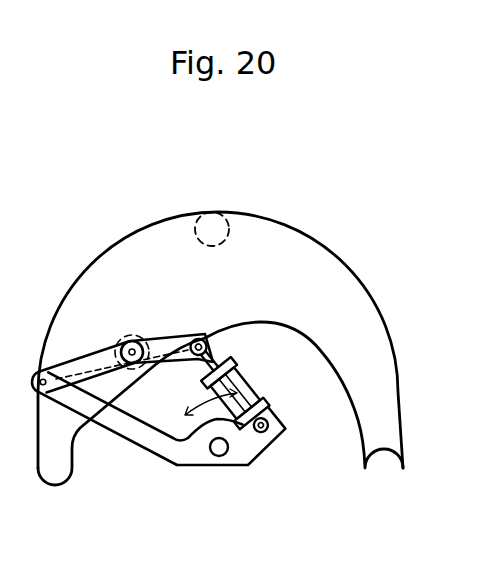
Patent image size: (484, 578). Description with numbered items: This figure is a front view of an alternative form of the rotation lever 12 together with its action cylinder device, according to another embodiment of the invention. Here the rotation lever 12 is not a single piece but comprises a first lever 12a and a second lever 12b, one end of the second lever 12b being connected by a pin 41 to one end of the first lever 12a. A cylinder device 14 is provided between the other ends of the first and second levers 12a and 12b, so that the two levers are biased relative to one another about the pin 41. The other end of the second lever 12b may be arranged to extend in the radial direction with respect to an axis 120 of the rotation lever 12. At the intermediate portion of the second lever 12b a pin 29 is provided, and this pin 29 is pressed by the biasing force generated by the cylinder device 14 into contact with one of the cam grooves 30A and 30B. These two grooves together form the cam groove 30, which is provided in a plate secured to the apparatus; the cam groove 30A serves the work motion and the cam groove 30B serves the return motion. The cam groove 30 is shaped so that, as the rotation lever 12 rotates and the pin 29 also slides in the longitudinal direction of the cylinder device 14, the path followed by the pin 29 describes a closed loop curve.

The rotation lever 12 is at (192, 474).
The first lever 12a is at (142, 446).
The second lever 12b is at (108, 340).
The cylinder device 14 is at (247, 387).
The pin 29 is at (138, 341).
The cam groove 30 is at (235, 331).
The cam groove for a work motion 30A is at (275, 225).
The cam groove for a return motion 30B is at (268, 324).
The pin 41 is at (50, 371).
The axis 120 is at (221, 449).